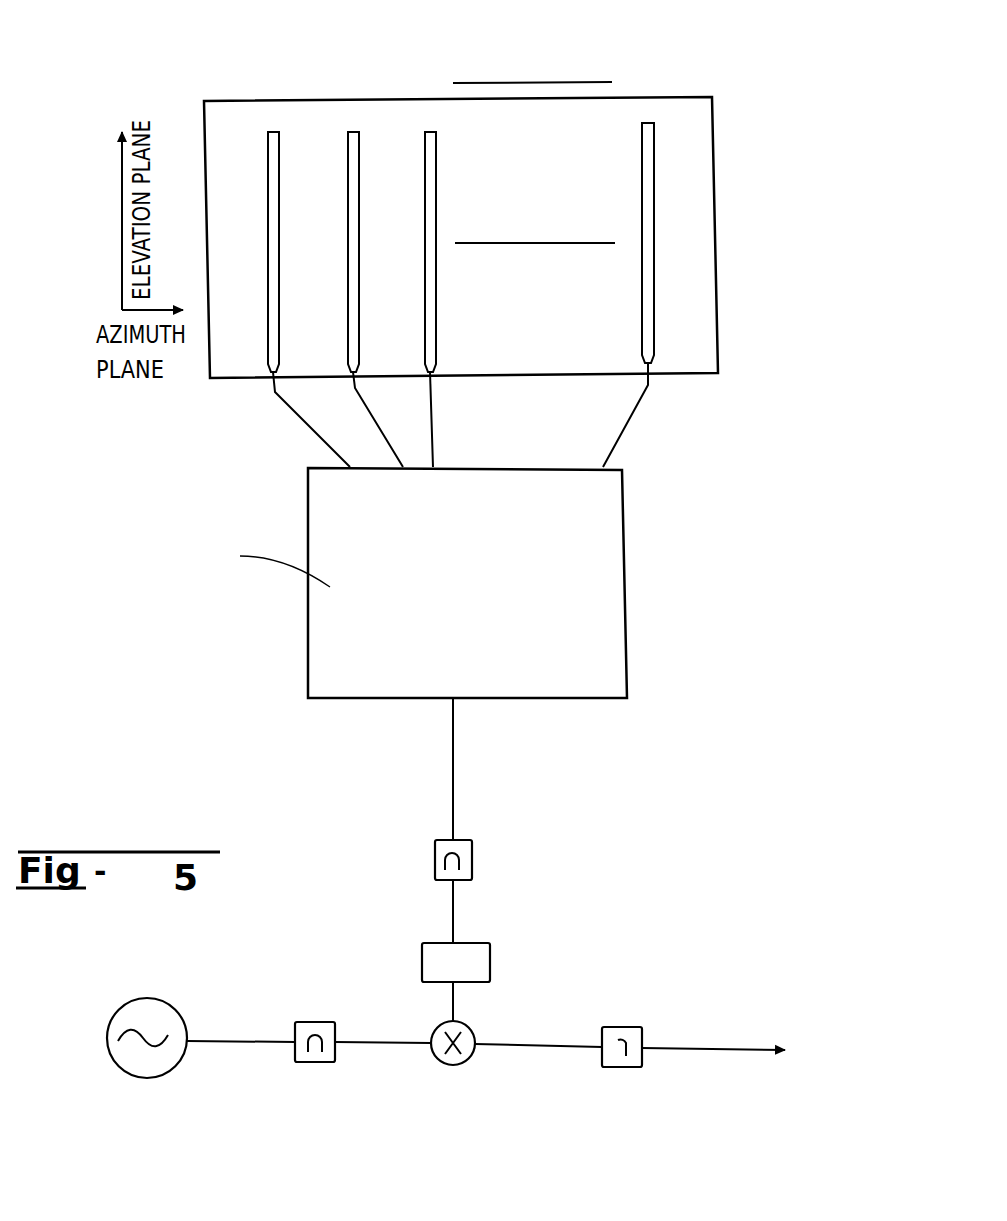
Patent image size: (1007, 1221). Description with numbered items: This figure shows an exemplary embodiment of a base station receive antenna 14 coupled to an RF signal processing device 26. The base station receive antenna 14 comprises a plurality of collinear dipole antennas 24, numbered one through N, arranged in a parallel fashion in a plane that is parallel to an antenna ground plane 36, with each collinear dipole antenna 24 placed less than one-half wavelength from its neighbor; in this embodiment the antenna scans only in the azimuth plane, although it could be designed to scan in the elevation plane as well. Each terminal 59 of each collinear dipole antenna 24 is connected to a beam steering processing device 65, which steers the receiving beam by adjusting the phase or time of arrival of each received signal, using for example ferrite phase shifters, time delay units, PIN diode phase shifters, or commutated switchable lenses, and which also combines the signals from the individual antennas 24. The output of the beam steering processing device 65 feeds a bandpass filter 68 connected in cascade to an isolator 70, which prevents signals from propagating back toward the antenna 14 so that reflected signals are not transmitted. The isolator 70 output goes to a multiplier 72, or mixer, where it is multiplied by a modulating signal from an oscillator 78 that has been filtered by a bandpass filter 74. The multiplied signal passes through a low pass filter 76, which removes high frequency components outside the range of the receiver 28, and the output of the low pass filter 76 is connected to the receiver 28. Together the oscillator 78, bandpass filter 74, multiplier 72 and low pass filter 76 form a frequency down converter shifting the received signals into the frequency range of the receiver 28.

The base station receive antenna 14 is at (453, 208).
The collinear dipole antenna 24 is at (281, 192).
The RF signal processing device 26 is at (750, 588).
The receiver 28 is at (773, 1056).
The antenna ground plane 36 is at (702, 183).
The terminal 59 is at (270, 387).
The beam steering processing device 65 is at (627, 562).
The bandpass filter 68 is at (472, 855).
The isolator 70 is at (490, 963).
The multiplier 72 is at (462, 1065).
The bandpass filter 74 is at (318, 1062).
The low pass filter 76 is at (625, 1067).
The oscillator 78 is at (150, 1078).